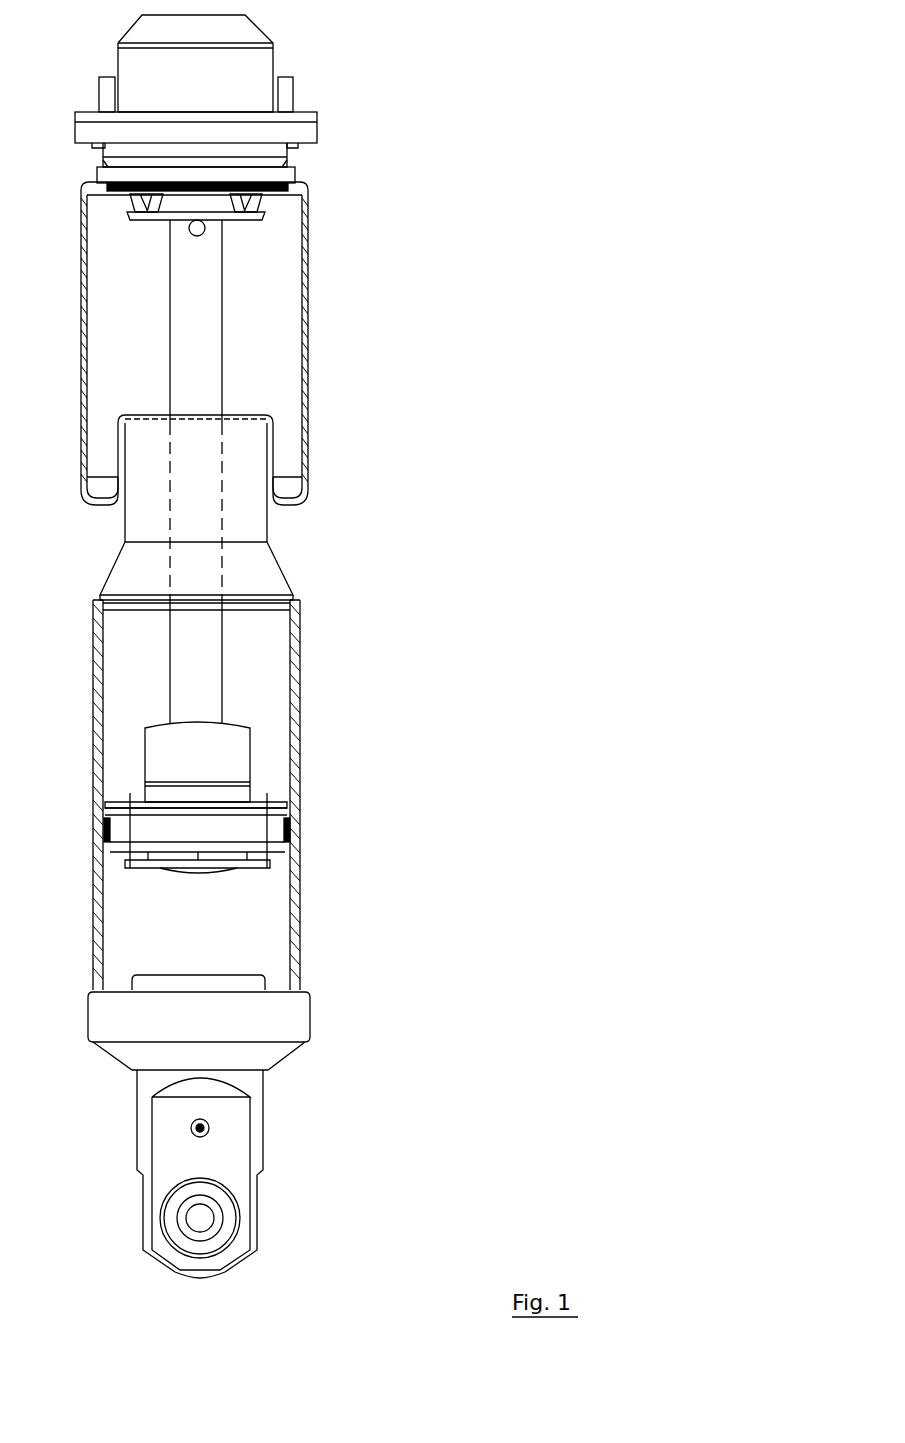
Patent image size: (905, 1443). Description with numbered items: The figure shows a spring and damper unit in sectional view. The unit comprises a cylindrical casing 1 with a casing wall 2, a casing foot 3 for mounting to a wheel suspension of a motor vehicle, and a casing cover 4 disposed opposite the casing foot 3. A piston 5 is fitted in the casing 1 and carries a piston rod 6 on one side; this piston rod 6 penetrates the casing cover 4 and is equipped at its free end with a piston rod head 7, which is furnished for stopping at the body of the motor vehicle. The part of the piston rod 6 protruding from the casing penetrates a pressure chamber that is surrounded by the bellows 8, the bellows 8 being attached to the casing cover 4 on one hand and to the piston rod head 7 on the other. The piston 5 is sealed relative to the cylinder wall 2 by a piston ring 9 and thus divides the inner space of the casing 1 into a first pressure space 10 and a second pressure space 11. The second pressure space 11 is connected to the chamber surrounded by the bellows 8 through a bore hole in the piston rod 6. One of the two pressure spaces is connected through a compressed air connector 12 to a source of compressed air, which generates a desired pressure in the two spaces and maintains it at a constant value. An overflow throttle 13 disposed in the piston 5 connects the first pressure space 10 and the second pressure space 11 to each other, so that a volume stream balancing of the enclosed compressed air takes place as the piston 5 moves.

The cylindrical casing 1 is at (313, 846).
The casing wall 2 is at (298, 961).
The casing foot 3 is at (247, 1160).
The casing cover 4 is at (255, 563).
The piston 5 is at (243, 835).
The piston rod 6 is at (200, 355).
The piston rod head 7 is at (255, 103).
The bellows 8 is at (310, 419).
The piston ring 9 is at (300, 830).
The first pressure space 10 is at (255, 682).
The second pressure space 11 is at (255, 255).
The compressed air connector 12 is at (207, 1121).
The overflow throttle 13 is at (257, 805).